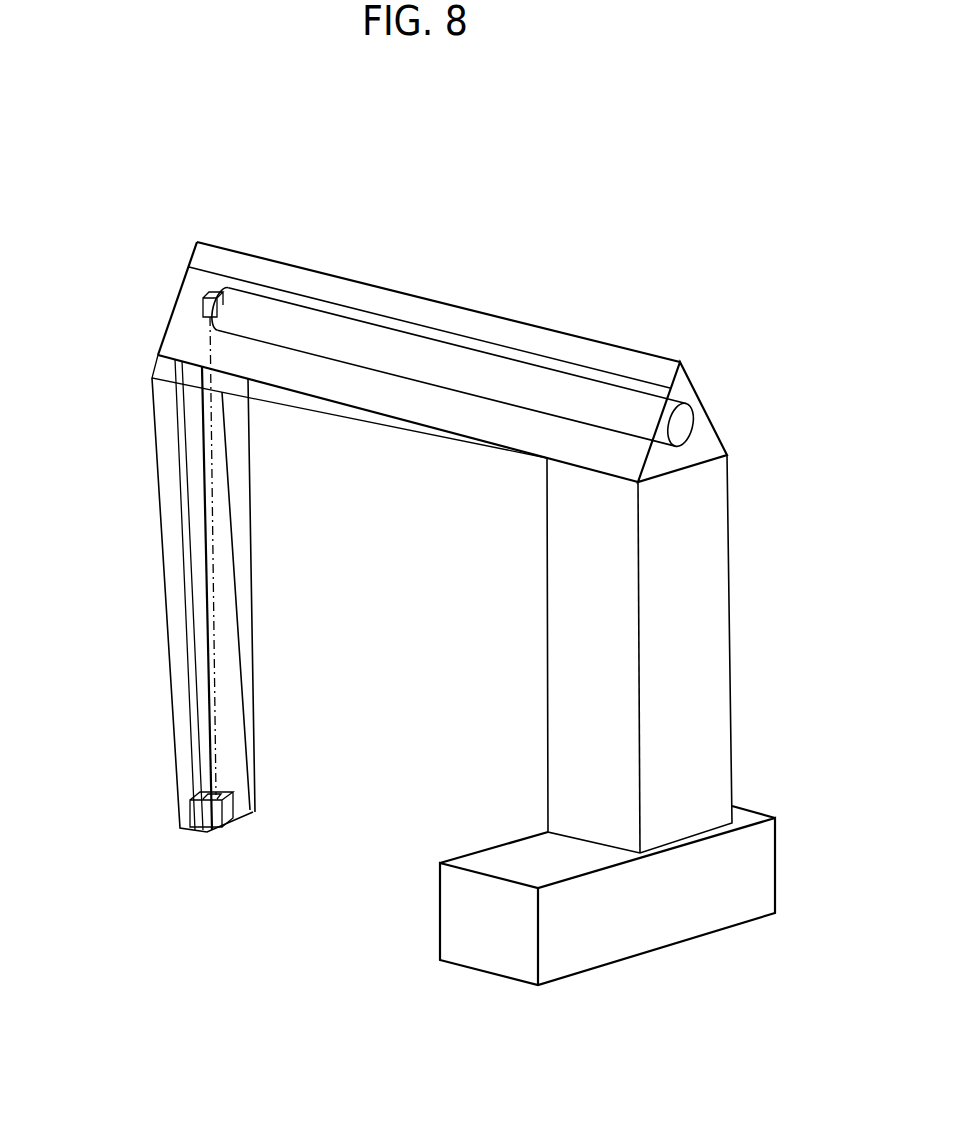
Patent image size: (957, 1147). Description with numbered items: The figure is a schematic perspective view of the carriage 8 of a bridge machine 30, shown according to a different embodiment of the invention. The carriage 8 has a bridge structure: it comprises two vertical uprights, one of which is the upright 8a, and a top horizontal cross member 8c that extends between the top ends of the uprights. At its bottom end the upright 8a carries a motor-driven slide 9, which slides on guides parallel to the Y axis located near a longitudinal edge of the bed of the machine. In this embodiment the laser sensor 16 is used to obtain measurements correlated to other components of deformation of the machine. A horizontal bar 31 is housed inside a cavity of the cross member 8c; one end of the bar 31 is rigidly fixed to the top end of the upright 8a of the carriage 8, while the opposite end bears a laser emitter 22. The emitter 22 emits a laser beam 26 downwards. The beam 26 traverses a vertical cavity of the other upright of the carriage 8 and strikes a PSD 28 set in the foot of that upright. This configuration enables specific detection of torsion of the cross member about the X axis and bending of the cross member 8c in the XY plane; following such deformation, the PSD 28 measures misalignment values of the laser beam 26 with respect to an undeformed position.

The carriage 8 is at (610, 332).
The vertical upright 8a is at (715, 583).
The top horizontal cross member 8c is at (247, 263).
The motor-driven slide 9 is at (765, 882).
The laser sensor 16 is at (188, 339).
The laser emitter 22 is at (200, 300).
The laser beam 26 is at (215, 573).
The PSD 28 is at (232, 822).
The bridge machine 30 is at (402, 262).
The horizontal bar 31 is at (423, 347).